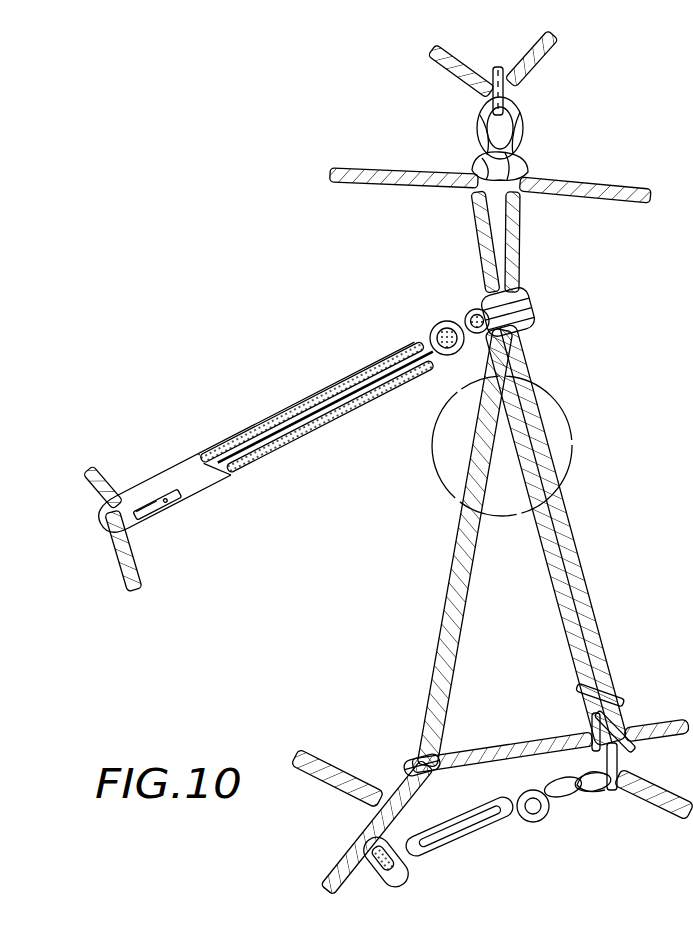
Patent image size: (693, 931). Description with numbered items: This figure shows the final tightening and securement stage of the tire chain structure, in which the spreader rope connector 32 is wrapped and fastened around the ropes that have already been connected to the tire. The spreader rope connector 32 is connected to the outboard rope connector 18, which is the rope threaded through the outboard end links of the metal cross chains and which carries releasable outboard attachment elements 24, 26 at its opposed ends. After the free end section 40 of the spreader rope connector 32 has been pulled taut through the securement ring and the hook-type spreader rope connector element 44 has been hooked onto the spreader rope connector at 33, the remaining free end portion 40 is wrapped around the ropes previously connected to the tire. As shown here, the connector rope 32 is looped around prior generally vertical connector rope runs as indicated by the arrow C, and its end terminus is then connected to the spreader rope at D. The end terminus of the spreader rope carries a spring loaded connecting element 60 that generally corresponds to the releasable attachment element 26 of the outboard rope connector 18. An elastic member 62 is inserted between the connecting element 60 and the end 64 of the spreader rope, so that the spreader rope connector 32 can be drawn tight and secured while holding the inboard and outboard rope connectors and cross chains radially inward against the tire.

The looping of connector rope around vertical rope runs C is at (534, 303).
The connection point of end terminus to spreader rope D is at (119, 482).
The outboard rope connector 18 is at (346, 875).
The releasable outboard attachment element 24 is at (432, 853).
The releasable outboard attachment element 26 is at (533, 822).
The spreader rope connector 32 is at (513, 748).
The hooking location on spreader rope connector 33 is at (380, 805).
The free end section of spreader rope connector 40 is at (462, 582).
The hook-type spreader rope connector element 44 is at (395, 784).
The spring loaded connecting element 60 is at (170, 508).
The elastic member 62 is at (293, 398).
The end of spreader rope 64 is at (465, 314).